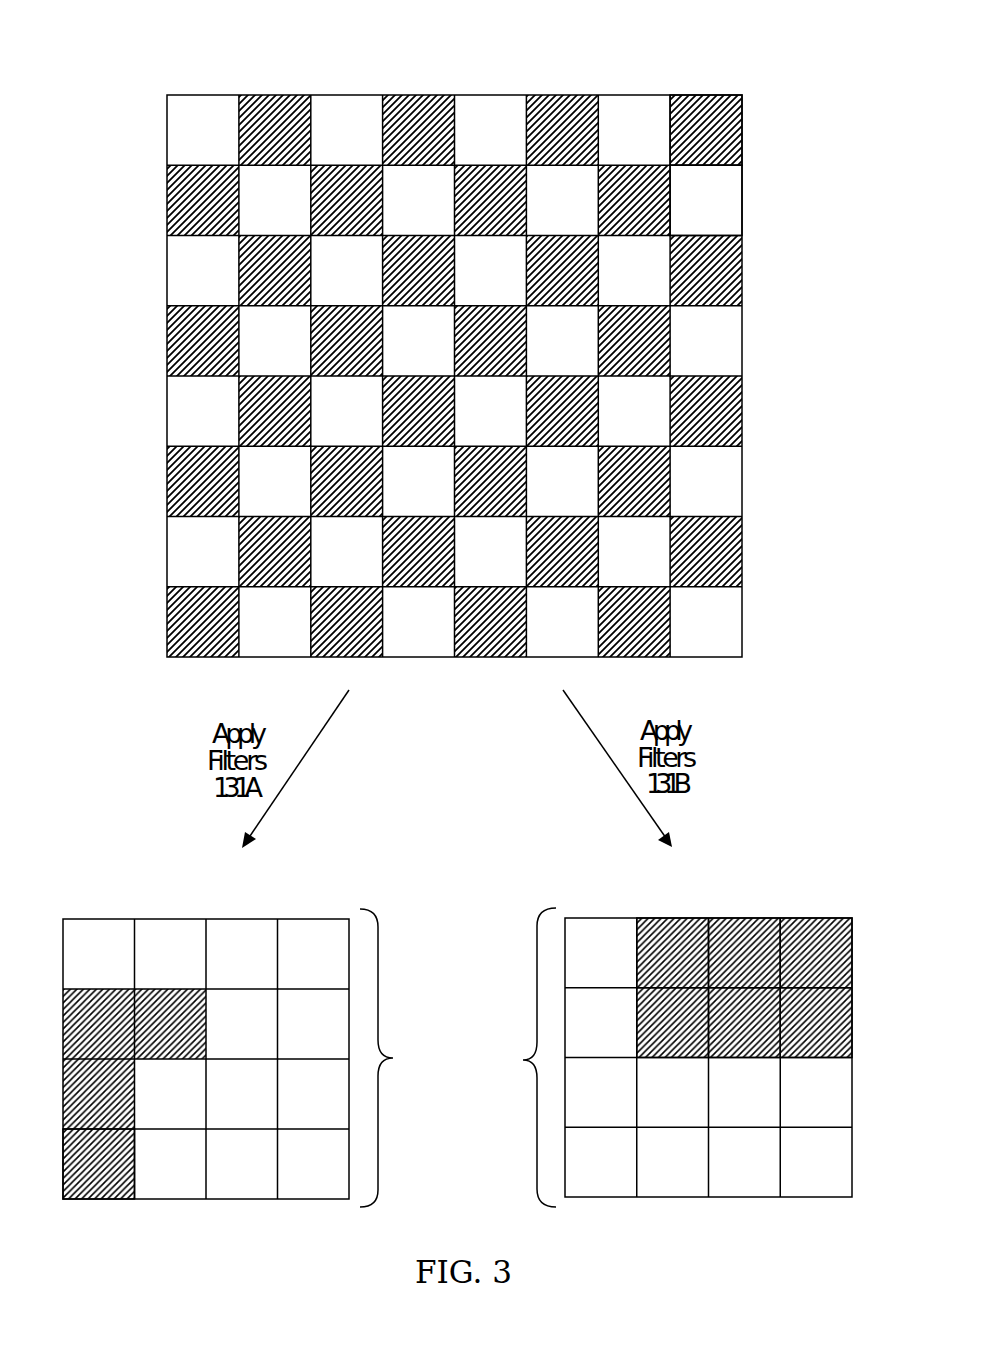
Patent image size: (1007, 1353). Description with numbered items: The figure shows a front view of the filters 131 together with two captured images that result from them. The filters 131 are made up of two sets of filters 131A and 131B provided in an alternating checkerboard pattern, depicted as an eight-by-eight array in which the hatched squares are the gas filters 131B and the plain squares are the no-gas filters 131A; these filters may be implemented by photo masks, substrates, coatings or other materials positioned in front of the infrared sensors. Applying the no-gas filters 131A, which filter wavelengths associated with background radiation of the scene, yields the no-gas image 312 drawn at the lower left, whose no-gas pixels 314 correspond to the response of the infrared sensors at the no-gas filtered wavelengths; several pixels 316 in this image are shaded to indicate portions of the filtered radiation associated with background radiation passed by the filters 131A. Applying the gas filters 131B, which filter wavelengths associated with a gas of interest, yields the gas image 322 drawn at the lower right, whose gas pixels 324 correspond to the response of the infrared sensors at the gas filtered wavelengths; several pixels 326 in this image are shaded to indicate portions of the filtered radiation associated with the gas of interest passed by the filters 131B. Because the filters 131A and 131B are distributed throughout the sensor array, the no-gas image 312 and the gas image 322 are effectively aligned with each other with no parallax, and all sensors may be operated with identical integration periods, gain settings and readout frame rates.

The filters 131 is at (172, 49).
The no-gas filters 131A is at (730, 195).
The gas filters 131B is at (728, 120).
The no-gas image 312 is at (121, 873).
The no-gas pixels 314 is at (396, 1058).
The shaded pixels 316 is at (93, 1190).
The gas image 322 is at (793, 873).
The gas pixels 324 is at (523, 1060).
The shaded pixels 326 is at (842, 938).